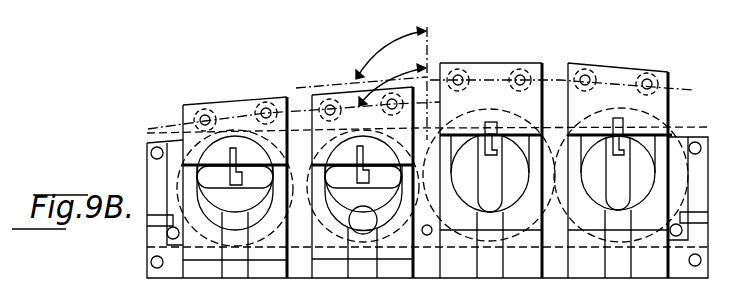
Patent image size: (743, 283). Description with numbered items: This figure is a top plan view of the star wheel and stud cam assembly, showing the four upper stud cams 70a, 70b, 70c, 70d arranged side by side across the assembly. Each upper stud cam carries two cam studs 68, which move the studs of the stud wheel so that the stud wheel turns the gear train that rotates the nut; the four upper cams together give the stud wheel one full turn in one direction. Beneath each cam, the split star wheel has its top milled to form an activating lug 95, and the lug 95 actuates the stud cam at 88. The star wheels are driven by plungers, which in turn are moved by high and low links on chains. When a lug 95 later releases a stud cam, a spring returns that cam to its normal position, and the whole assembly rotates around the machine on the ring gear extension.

The cam stud 68 is at (205, 108).
The upper stud cam 70a is at (585, 67).
The upper stud cam 70b is at (498, 62).
The upper stud cam 70c is at (325, 92).
The upper stud cam 70d is at (233, 96).
The actuating point 88 is at (215, 170).
The activating lug 95 is at (252, 194).